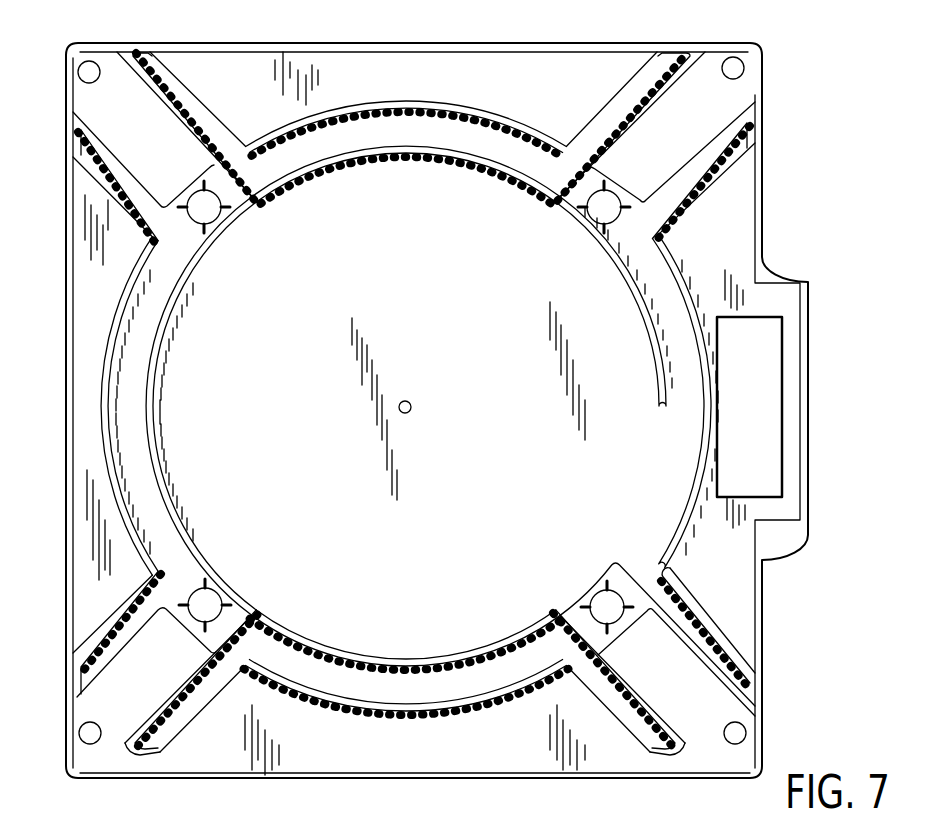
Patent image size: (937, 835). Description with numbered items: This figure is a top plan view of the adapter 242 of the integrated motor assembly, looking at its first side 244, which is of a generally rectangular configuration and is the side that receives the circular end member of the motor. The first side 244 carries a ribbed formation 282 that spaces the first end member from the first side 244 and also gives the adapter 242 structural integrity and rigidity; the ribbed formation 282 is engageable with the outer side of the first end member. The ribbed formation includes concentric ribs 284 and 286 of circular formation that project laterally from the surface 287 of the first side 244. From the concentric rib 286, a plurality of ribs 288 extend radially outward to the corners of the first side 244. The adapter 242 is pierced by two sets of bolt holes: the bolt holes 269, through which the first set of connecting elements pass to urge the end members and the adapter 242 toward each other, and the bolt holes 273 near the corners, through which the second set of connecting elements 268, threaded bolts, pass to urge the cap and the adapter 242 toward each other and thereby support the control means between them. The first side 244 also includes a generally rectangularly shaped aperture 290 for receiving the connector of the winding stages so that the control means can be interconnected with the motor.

The adapter 242 is at (792, 167).
The first side 244 is at (247, 92).
The connecting elements 268 is at (279, 7).
The bolt holes 269 is at (206, 210).
The bolt holes 273 is at (90, 61).
The ribbed formation 282 is at (128, 434).
The concentric rib 284 is at (372, 160).
The concentric rib 286 is at (327, 702).
The surface 287 is at (407, 633).
The ribs 288 is at (132, 182).
The aperture 290 is at (762, 403).